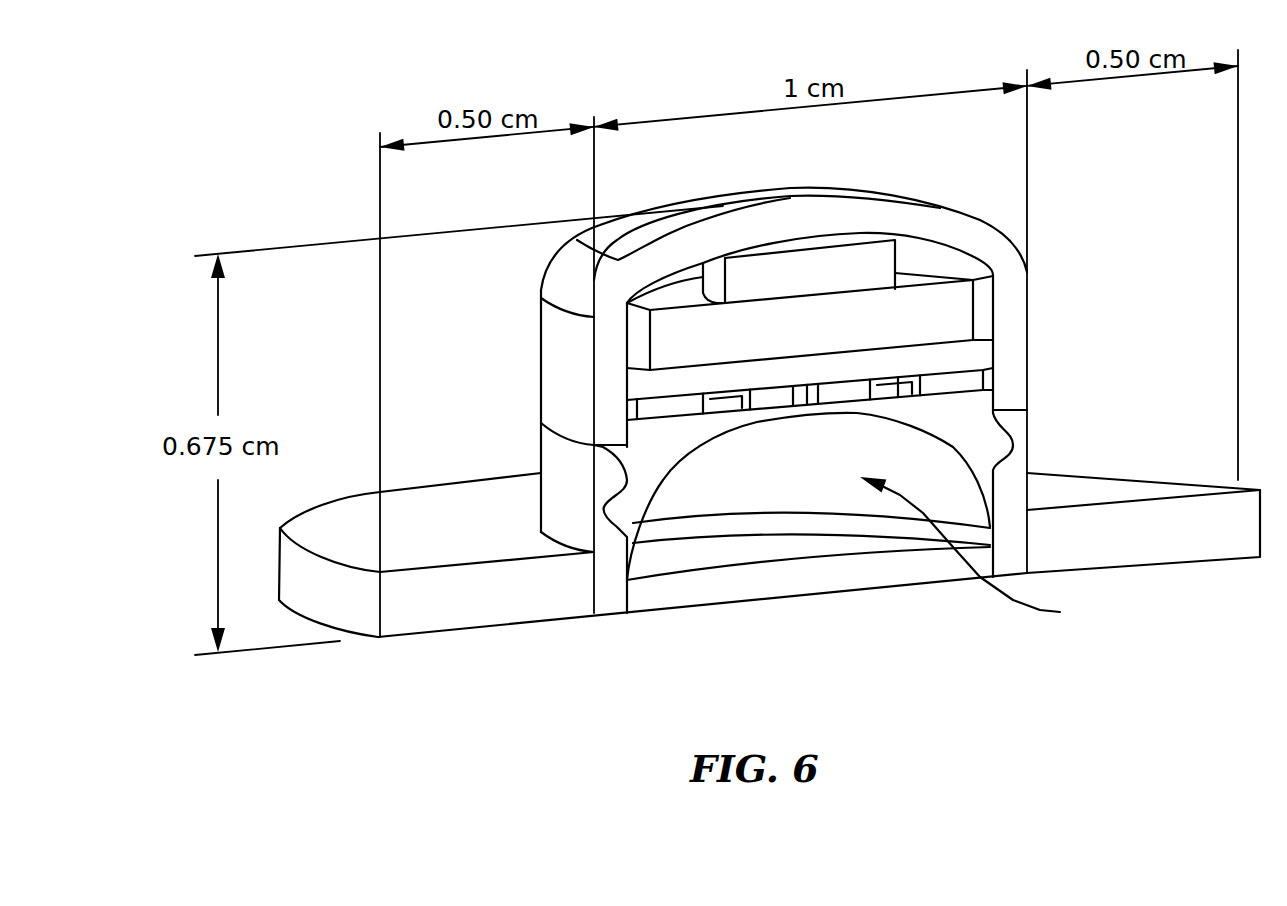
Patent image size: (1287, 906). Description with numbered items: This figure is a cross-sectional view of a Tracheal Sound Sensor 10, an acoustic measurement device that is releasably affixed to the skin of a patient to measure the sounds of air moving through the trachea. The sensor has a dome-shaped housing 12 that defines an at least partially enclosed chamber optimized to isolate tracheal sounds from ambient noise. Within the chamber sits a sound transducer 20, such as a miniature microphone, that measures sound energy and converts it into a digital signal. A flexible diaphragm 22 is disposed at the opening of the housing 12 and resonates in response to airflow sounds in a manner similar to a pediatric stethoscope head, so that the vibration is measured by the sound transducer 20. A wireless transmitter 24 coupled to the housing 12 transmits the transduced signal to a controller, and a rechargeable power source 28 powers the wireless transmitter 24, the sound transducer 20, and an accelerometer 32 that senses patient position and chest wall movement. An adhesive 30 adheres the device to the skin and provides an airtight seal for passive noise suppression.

The Tracheal Sound Sensor 10 is at (668, 82).
The housing 12 is at (922, 220).
The sound transducer 20 is at (857, 403).
The flexible diaphragm 22 is at (750, 603).
The wireless transmitter 24 is at (883, 262).
The rechargeable power source 28 is at (948, 317).
The adhesive 30 is at (490, 595).
The accelerometer 32 is at (665, 409).